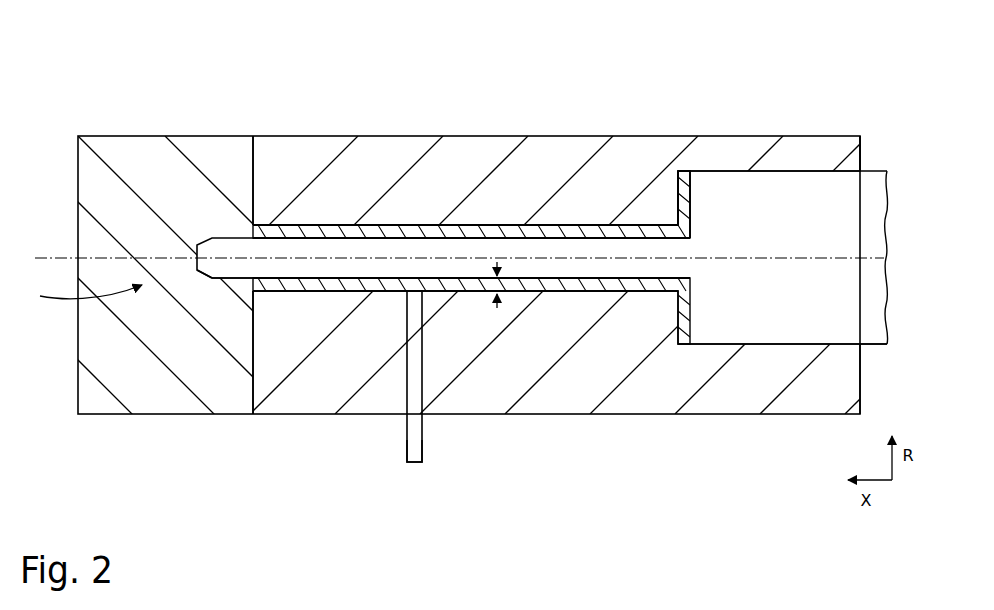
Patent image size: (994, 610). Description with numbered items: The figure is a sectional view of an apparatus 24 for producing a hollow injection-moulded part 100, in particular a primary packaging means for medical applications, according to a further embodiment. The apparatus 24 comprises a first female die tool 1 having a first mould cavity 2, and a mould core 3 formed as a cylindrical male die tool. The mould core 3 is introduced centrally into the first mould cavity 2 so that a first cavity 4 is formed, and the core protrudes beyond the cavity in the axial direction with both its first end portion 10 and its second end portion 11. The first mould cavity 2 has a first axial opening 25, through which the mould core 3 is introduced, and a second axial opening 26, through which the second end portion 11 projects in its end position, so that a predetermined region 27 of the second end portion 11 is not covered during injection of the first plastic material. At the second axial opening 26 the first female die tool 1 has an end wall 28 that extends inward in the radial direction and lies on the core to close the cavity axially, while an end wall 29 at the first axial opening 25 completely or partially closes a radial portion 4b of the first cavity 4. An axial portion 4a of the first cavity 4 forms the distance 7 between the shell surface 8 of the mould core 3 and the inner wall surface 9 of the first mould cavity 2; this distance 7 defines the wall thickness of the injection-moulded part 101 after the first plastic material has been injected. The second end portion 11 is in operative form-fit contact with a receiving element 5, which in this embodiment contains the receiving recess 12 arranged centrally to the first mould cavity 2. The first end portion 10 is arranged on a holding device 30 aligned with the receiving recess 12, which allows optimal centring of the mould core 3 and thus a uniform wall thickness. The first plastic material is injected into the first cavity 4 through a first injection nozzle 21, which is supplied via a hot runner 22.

The first female die tool 1 is at (563, 160).
The first mould cavity 2 is at (497, 232).
The mould core 3 is at (568, 272).
The first cavity 4 is at (317, 225).
The axial portion of the first cavity 4a is at (317, 225).
The radial portion of the first cavity 4b is at (676, 200).
The receiving element 5 is at (150, 136).
The distance 7 is at (499, 312).
The shell surface 8 is at (350, 292).
The inner wall surface 9 is at (370, 225).
The first end portion 10 is at (738, 330).
The second end portion 11 is at (213, 268).
The receiving recess 12 is at (213, 136).
The first injection nozzle 21 is at (421, 300).
The hot runner 22 is at (405, 450).
The apparatus 24 is at (79, 100).
The first axial opening 25 is at (867, 163).
The second axial opening 26 is at (81, 297).
The predetermined region 27 is at (233, 278).
The end wall 28 is at (236, 136).
The end wall 29 is at (692, 190).
The holding device 30 is at (873, 346).
The hollow injection-moulded part 100 is at (420, 238).
The injection-moulded part 101 is at (411, 225).